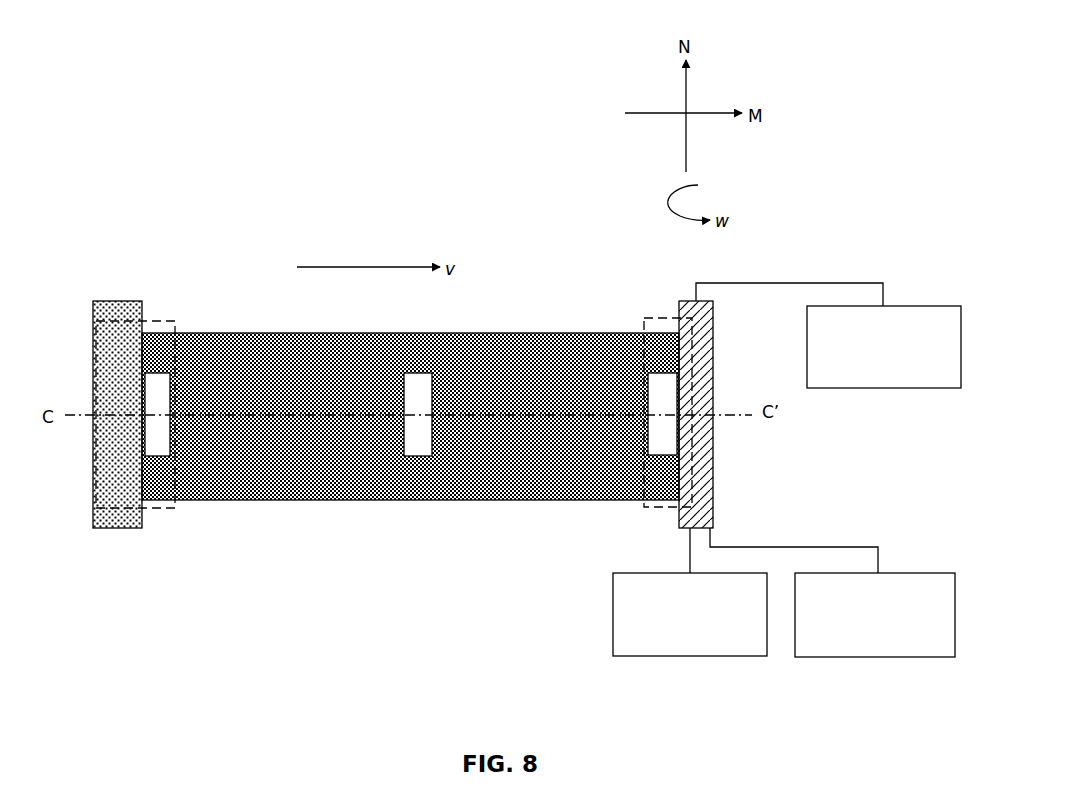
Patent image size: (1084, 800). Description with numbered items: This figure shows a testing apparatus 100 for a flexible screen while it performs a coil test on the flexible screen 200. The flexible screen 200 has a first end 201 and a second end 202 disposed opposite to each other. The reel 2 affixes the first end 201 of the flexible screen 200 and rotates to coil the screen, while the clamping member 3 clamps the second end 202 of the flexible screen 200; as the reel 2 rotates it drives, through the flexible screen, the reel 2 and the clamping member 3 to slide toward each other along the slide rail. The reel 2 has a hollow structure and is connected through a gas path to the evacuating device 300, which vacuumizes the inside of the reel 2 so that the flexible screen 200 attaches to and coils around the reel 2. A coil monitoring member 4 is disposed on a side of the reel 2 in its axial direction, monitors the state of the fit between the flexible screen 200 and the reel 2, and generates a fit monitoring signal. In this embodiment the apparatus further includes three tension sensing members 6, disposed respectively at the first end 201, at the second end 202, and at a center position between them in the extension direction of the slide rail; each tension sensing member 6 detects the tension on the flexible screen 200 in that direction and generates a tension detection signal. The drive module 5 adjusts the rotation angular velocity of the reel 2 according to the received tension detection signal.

The testing apparatus for a flexible screen 100 is at (290, 181).
The flexible screen 200 is at (537, 332).
The clamping member 3 is at (106, 301).
The reel 2 is at (702, 447).
The second end 202 is at (155, 510).
The first end 201 is at (662, 507).
The tension sensing member 6 is at (162, 438).
The drive module 5 is at (883, 388).
The evacuating device 300 is at (677, 656).
The coil monitoring member 4 is at (877, 656).